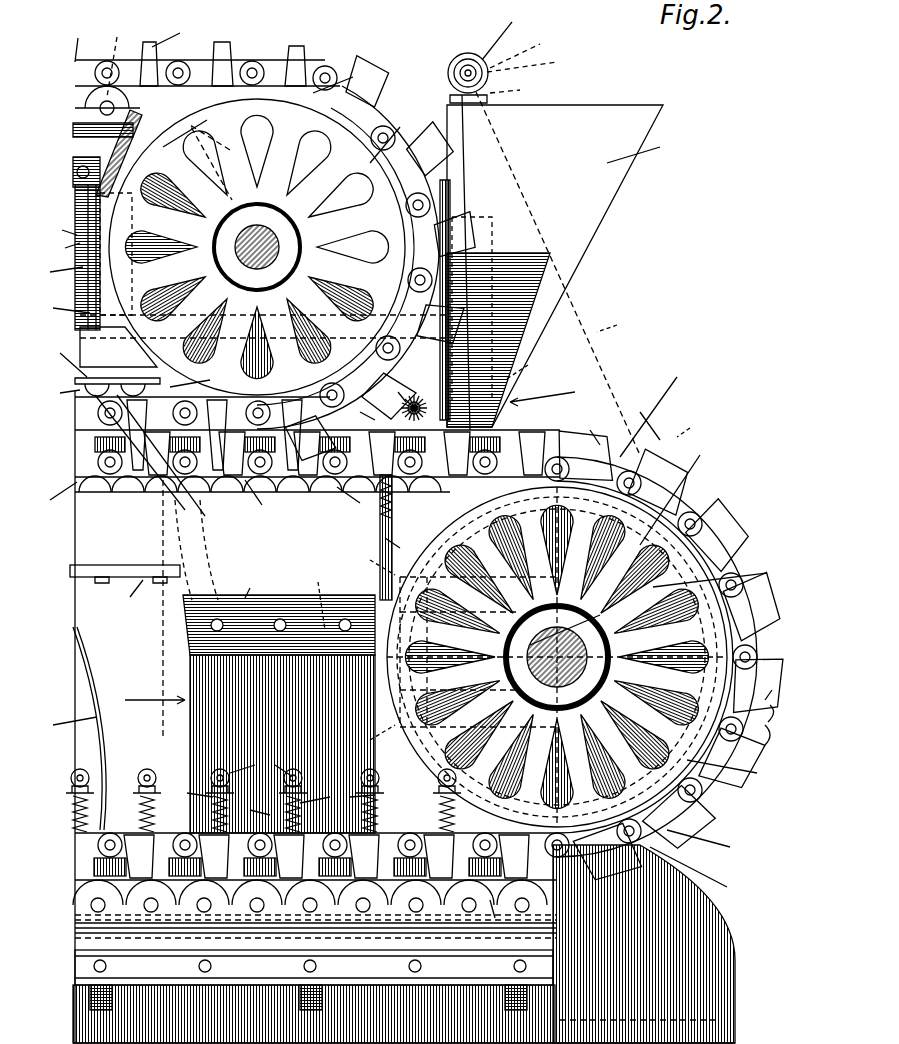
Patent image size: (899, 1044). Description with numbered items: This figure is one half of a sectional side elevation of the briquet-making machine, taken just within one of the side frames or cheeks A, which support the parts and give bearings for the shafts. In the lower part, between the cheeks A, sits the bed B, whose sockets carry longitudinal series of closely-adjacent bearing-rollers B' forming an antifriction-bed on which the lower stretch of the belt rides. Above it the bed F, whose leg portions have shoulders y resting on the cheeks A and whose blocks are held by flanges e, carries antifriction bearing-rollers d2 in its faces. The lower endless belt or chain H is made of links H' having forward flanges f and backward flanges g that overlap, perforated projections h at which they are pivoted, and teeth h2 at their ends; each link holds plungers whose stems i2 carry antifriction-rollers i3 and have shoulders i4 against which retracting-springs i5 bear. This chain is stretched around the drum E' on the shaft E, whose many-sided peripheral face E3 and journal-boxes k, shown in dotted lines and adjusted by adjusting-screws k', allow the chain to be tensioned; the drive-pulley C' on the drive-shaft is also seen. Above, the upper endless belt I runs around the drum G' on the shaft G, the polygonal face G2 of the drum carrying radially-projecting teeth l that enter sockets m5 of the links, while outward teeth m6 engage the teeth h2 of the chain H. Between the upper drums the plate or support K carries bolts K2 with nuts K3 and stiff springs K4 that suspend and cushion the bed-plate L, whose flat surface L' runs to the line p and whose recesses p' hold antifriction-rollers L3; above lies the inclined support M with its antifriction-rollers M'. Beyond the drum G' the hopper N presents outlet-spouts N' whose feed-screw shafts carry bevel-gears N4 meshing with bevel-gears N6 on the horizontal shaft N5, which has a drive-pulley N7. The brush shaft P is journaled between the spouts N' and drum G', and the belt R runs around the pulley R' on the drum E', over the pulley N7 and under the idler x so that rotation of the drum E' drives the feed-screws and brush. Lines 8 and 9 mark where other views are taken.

The shaft G is at (257, 247).
The polygonal circumferential face G2 is at (198, 151).
The drum G' is at (396, 136).
The endless belt or chain I is at (50, 420).
The outward-projecting teeth m6 is at (200, 272).
The sockets m5 is at (200, 379).
The radially-projecting teeth l is at (335, 74).
The support M is at (107, 152).
The antifriction-rollers M' is at (107, 64).
The horizontally-extending plate or support K is at (239, 261).
The bolts K2 is at (52, 223).
The nuts K3 is at (56, 249).
The stiff springs K4 is at (58, 303).
The suspended bed-plate L is at (118, 347).
The flat horizontal surface L' is at (98, 360).
The antifriction-rollers L3 is at (87, 395).
The endless belt or chain H is at (406, 682).
The links H' is at (704, 872).
The antifriction bearing-rollers d2 is at (233, 500).
The teeth h2 is at (499, 629).
The intermeshing perforated projections h is at (586, 430).
The shaft E is at (582, 657).
The drum E' is at (575, 620).
The shaft s is at (555, 657).
The many-sided peripheral face E3 is at (536, 448).
The backward-extending flange g is at (778, 728).
The bucket lip v is at (778, 682).
The hopper N is at (562, 266).
The bevel-gears N6 is at (544, 228).
The horizontal shaft N5 is at (527, 47).
The drive-pulley N7 is at (536, 61).
The bevel-gears N4 is at (518, 87).
The outlet-spouts N' is at (551, 389).
The section line 8 8 is at (520, 380).
The idler x is at (527, 363).
The belt R is at (615, 325).
The pulley R' is at (693, 421).
The horizontal shaft P is at (415, 394).
The line p is at (397, 389).
The recesses p' is at (360, 410).
The side frames or cheeks A is at (404, 716).
The forward-extending flange f is at (279, 625).
The flanges e is at (125, 590).
The shoulders y is at (250, 583).
The adjusting-screws k' is at (314, 596).
The journal-boxes k is at (372, 647).
The bed F is at (110, 528).
The drive-pulley C' is at (68, 728).
The section line 9 is at (155, 611).
The shoulder i4 is at (139, 800).
The antifriction-roller i3 is at (249, 791).
The shank or stem i2 is at (278, 800).
The retracting-spring i5 is at (380, 800).
The bed B is at (314, 967).
The bearing-rollers B' is at (489, 920).